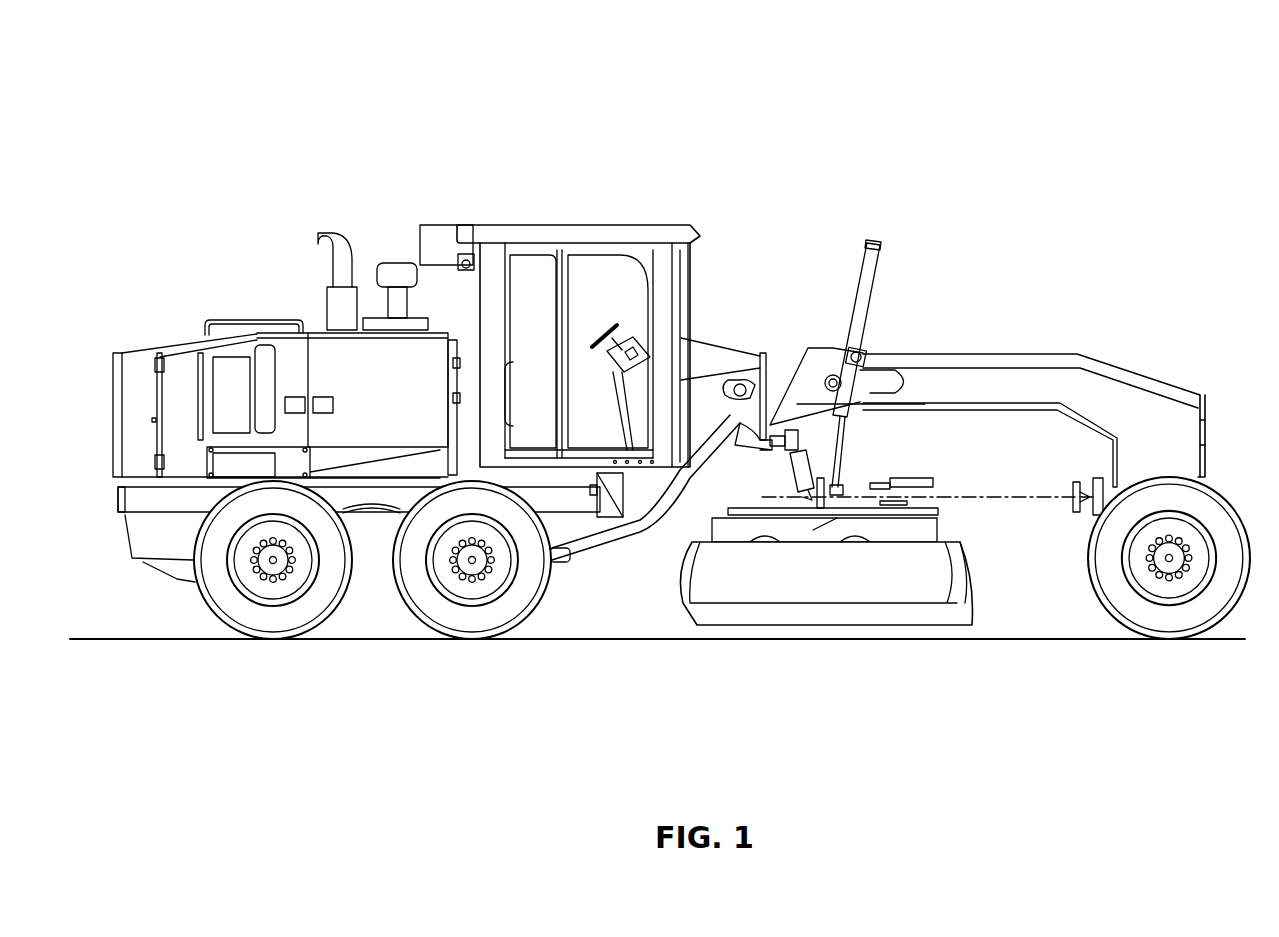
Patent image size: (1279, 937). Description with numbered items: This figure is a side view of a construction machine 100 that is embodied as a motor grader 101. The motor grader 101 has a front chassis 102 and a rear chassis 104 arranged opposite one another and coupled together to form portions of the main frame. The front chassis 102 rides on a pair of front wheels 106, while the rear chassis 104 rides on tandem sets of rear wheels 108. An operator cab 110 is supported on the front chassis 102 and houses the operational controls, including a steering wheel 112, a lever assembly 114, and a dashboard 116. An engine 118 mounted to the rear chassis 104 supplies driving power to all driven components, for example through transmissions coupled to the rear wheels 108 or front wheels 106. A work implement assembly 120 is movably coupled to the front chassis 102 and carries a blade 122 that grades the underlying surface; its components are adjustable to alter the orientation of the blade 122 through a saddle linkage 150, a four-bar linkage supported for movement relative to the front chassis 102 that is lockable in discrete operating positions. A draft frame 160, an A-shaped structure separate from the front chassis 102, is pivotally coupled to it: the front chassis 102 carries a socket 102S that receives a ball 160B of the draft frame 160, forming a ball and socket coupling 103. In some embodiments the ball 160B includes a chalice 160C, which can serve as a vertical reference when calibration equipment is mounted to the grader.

The construction machine 100 is at (198, 56).
The motor grader 101 is at (297, 73).
The front chassis 102 is at (1172, 345).
The socket 102S is at (1125, 485).
The ball and socket coupling 103 is at (1113, 493).
The rear chassis 104 is at (135, 583).
The front wheels 106 is at (1102, 563).
The rear wheels 108 is at (276, 612).
The operator cab 110 is at (500, 226).
The steering wheel 112 is at (618, 322).
The lever assembly 114 is at (638, 332).
The dashboard 116 is at (682, 383).
The engine 118 is at (297, 355).
The work implement assembly 120 is at (815, 305).
The blade 122 is at (833, 578).
The saddle linkage 150 is at (825, 355).
The draft frame 160 is at (963, 480).
The ball 160B is at (1100, 503).
The chalice 160C is at (1107, 497).